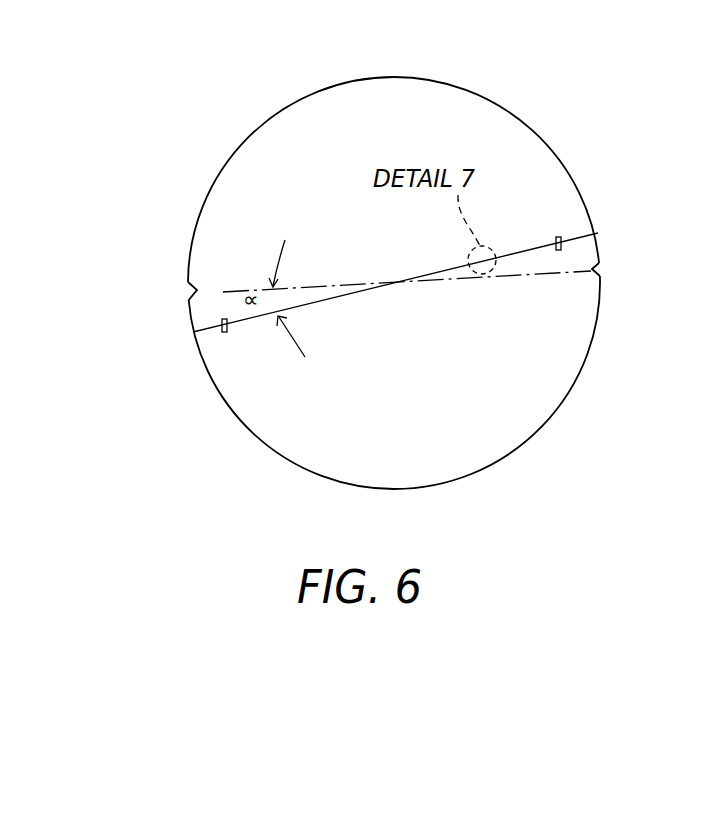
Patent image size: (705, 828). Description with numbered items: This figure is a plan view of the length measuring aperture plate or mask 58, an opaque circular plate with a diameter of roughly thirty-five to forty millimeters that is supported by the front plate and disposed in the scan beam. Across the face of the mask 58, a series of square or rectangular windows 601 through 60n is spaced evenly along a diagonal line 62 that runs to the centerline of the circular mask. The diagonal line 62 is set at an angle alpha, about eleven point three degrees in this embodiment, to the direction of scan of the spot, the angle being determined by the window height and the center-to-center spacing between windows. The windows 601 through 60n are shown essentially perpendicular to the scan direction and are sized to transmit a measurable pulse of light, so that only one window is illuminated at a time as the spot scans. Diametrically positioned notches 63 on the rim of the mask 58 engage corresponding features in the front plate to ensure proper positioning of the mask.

The length measuring aperture plate or mask 58 is at (515, 418).
The diagonal line 62 is at (347, 297).
The notches 63 is at (190, 293).
The window 60n is at (558, 238).
The window 601 is at (233, 334).